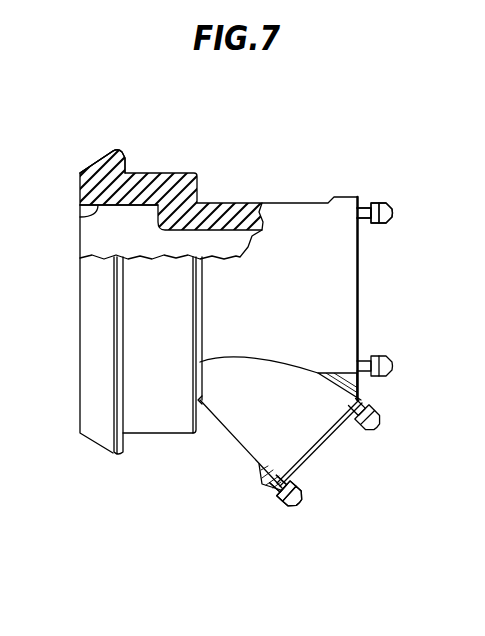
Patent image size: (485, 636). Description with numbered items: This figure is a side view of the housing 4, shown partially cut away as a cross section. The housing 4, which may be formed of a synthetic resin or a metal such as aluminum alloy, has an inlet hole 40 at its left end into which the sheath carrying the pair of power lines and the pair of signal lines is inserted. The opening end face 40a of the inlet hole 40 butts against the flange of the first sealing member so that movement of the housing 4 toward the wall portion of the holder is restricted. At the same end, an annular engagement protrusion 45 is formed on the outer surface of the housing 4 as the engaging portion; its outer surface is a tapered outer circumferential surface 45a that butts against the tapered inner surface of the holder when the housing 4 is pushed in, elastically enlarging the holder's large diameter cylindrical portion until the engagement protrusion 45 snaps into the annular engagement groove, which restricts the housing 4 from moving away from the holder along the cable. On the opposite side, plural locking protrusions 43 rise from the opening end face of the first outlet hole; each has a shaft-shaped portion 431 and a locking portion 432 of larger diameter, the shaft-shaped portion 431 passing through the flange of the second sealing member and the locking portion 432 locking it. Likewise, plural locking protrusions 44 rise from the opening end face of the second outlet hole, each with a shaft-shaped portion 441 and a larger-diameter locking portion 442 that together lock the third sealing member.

The housing 4 is at (281, 180).
The inlet hole 40 is at (80, 215).
The opening end face of the inlet hole 40a is at (80, 188).
The locking protrusion 43 is at (468, 137).
The shaft-shaped portion 431 is at (368, 203).
The locking portion 432 is at (388, 203).
The locking protrusion 44 is at (383, 420).
The shaft-shaped portion 441 is at (283, 495).
The locking portion 442 is at (297, 508).
The annular engagement protrusion 45 is at (118, 162).
The tapered outer circumferential surface 45a is at (105, 157).